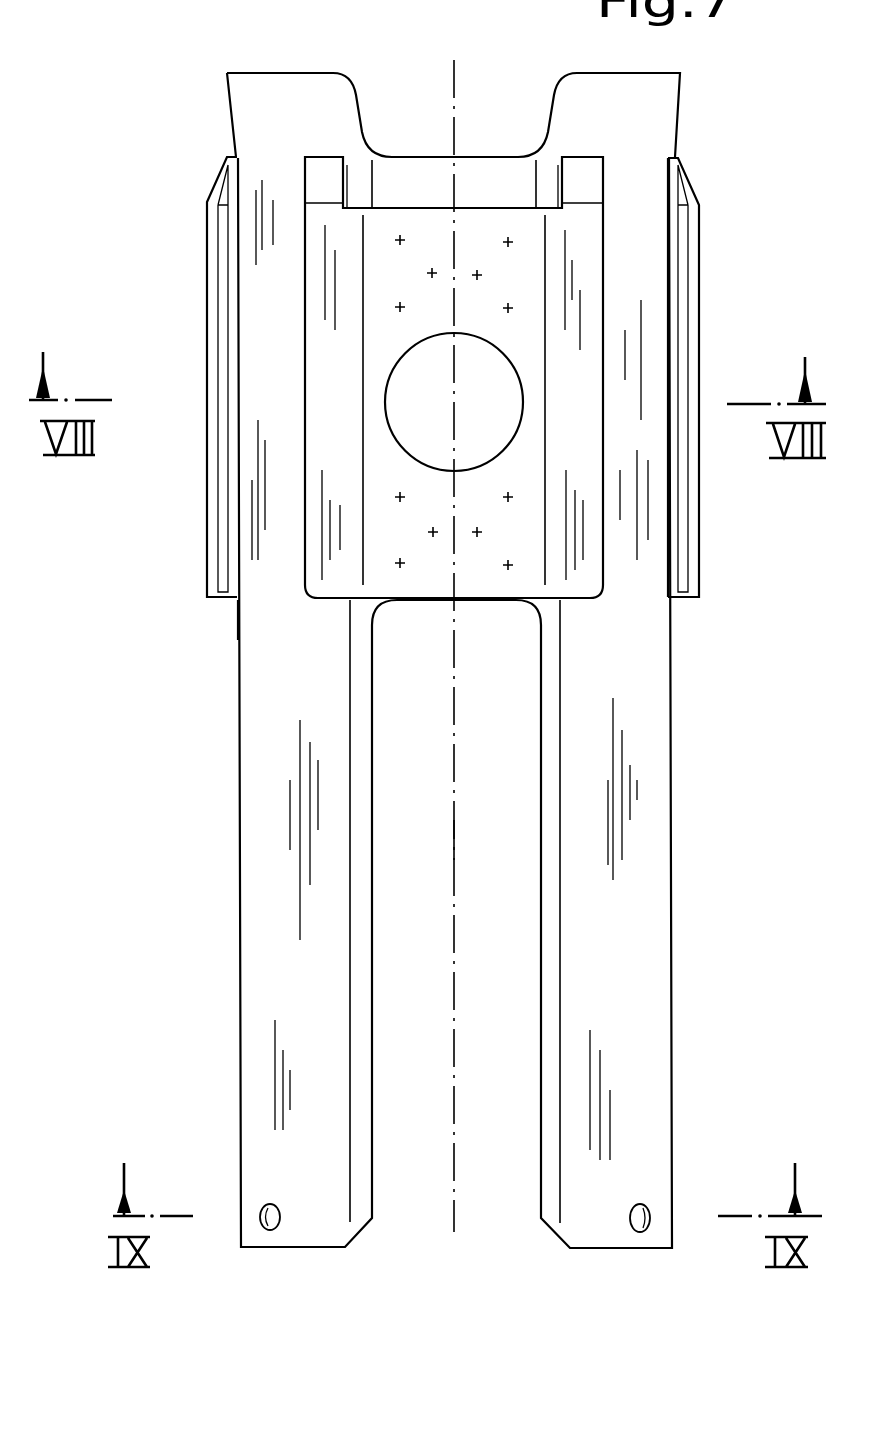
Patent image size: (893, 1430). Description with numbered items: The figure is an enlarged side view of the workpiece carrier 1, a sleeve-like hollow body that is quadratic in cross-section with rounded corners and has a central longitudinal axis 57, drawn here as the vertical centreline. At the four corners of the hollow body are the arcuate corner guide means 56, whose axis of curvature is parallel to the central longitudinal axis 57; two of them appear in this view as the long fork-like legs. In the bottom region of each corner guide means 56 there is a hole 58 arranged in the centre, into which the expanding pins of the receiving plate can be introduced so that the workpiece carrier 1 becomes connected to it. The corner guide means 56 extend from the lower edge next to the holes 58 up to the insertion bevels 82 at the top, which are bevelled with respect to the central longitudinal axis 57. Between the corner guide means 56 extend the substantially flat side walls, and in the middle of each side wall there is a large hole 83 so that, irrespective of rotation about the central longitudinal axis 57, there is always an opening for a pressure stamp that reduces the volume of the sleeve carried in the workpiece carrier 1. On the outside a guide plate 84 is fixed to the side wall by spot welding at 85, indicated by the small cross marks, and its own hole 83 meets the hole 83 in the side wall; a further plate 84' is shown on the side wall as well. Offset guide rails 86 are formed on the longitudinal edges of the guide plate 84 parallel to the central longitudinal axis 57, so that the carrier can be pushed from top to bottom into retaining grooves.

The workpiece carrier 1 is at (229, 605).
The corner guide means 56 is at (270, 1168).
The central longitudinal axis 57 is at (455, 843).
The holes 58 is at (278, 1228).
The insertion bevels 82 is at (285, 103).
The hole 83 is at (427, 397).
The guide plate 84 is at (406, 377).
The mounting plate 84' is at (360, 377).
The spot welding 85 is at (508, 562).
The guide rails 86 is at (322, 330).